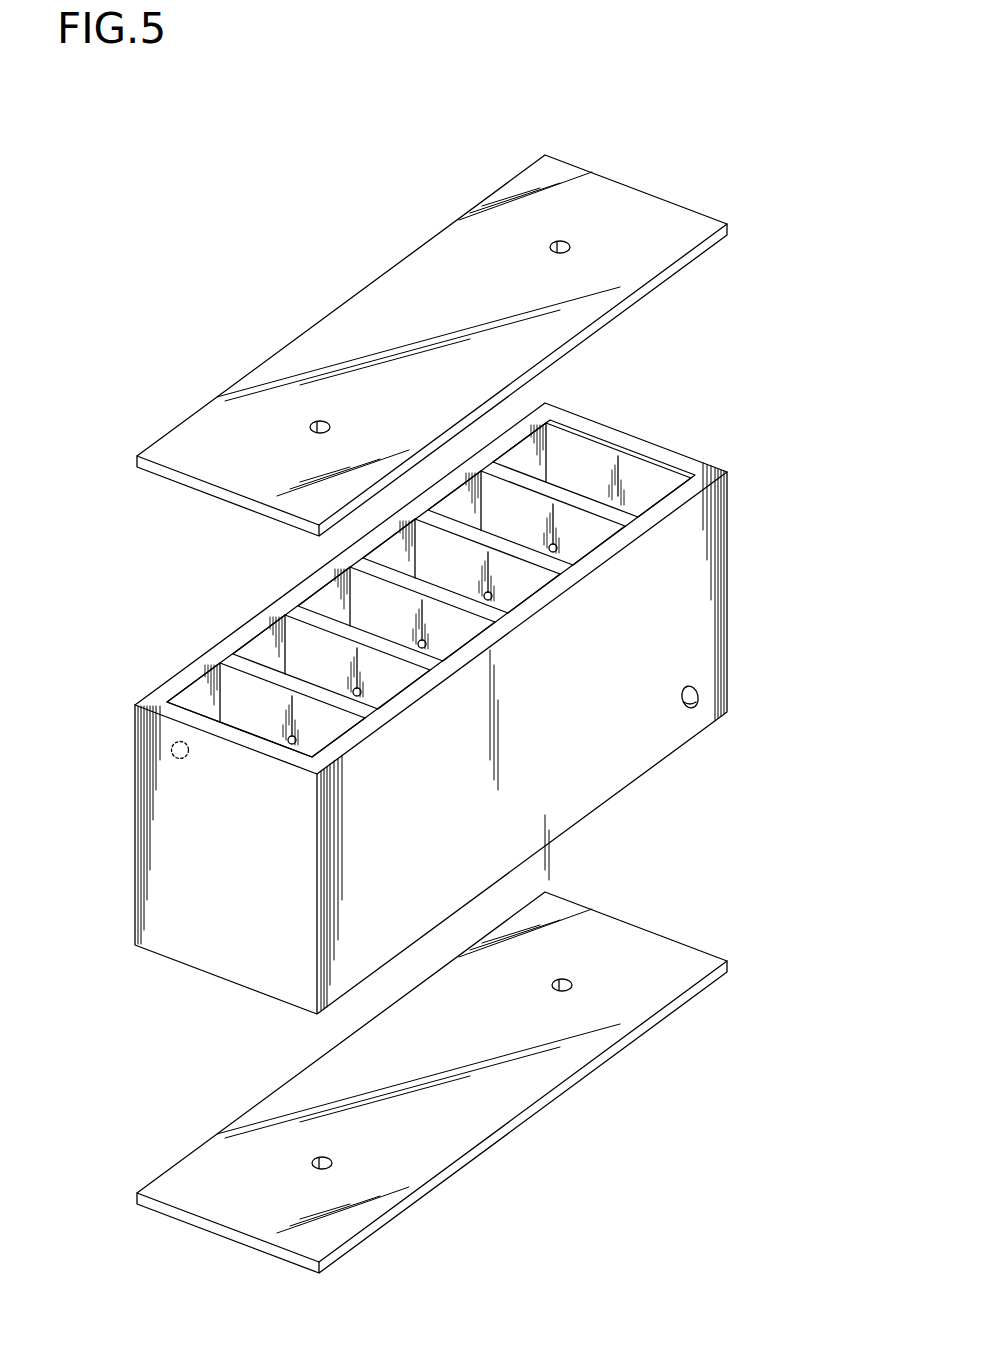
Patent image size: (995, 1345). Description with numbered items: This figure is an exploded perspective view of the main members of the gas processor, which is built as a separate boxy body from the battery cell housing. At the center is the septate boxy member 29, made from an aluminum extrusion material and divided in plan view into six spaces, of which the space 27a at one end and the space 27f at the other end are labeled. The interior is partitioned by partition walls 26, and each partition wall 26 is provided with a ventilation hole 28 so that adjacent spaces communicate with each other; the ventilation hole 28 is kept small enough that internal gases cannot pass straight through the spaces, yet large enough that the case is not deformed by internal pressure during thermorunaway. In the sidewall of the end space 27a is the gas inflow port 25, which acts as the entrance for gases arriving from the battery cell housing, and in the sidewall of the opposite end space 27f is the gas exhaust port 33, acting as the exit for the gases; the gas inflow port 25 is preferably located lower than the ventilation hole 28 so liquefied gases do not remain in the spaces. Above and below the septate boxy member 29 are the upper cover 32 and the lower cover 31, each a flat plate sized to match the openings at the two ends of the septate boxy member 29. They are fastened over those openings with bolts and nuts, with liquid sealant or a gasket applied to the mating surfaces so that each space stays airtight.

The gas inflow port 25 is at (700, 697).
The partition wall 26 is at (620, 512).
The space 27a is at (202, 697).
The space 27f is at (647, 477).
The ventilation hole 28 is at (300, 612).
The septate boxy member 29 is at (690, 610).
The lower cover 31 is at (645, 968).
The upper cover 32 is at (662, 250).
The gas exhaust port 33 is at (172, 758).